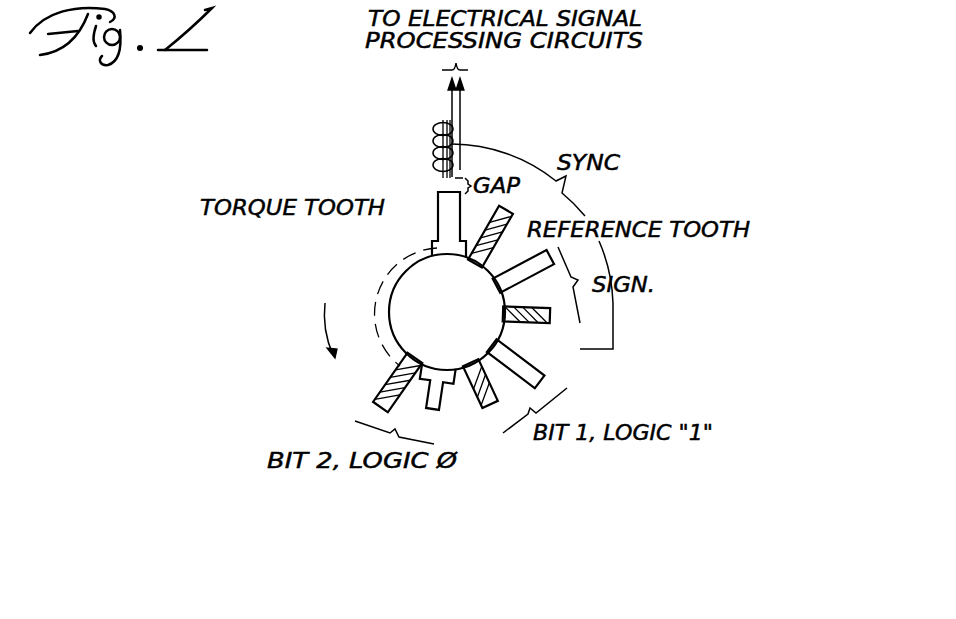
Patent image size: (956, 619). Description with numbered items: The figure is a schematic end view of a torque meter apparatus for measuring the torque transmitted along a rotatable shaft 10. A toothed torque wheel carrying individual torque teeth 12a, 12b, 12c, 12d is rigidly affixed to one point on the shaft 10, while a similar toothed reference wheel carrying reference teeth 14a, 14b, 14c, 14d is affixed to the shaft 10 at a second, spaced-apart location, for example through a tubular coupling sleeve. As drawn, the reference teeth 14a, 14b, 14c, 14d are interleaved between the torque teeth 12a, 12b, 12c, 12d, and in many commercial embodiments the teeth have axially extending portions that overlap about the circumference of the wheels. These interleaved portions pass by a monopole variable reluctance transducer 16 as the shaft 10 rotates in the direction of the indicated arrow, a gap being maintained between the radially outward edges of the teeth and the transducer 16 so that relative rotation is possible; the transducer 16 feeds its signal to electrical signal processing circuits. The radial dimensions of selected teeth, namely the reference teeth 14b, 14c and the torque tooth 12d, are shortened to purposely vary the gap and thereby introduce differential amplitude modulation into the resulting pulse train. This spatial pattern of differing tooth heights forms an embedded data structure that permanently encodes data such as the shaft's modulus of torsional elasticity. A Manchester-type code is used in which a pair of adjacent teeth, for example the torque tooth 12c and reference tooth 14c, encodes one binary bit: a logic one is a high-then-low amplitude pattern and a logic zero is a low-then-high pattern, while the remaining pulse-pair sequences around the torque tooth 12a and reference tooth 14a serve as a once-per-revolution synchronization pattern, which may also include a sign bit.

The rotatable shaft 10 is at (462, 325).
The torque tooth 12a is at (438, 223).
The torque tooth 12b is at (527, 276).
The torque tooth 12c is at (500, 372).
The torque tooth 12d is at (433, 411).
The reference tooth 14a is at (526, 228).
The reference tooth 14b is at (516, 325).
The reference tooth 14c is at (473, 406).
The reference tooth 14d is at (394, 382).
The monopole variable reluctance transducer 16 is at (433, 149).